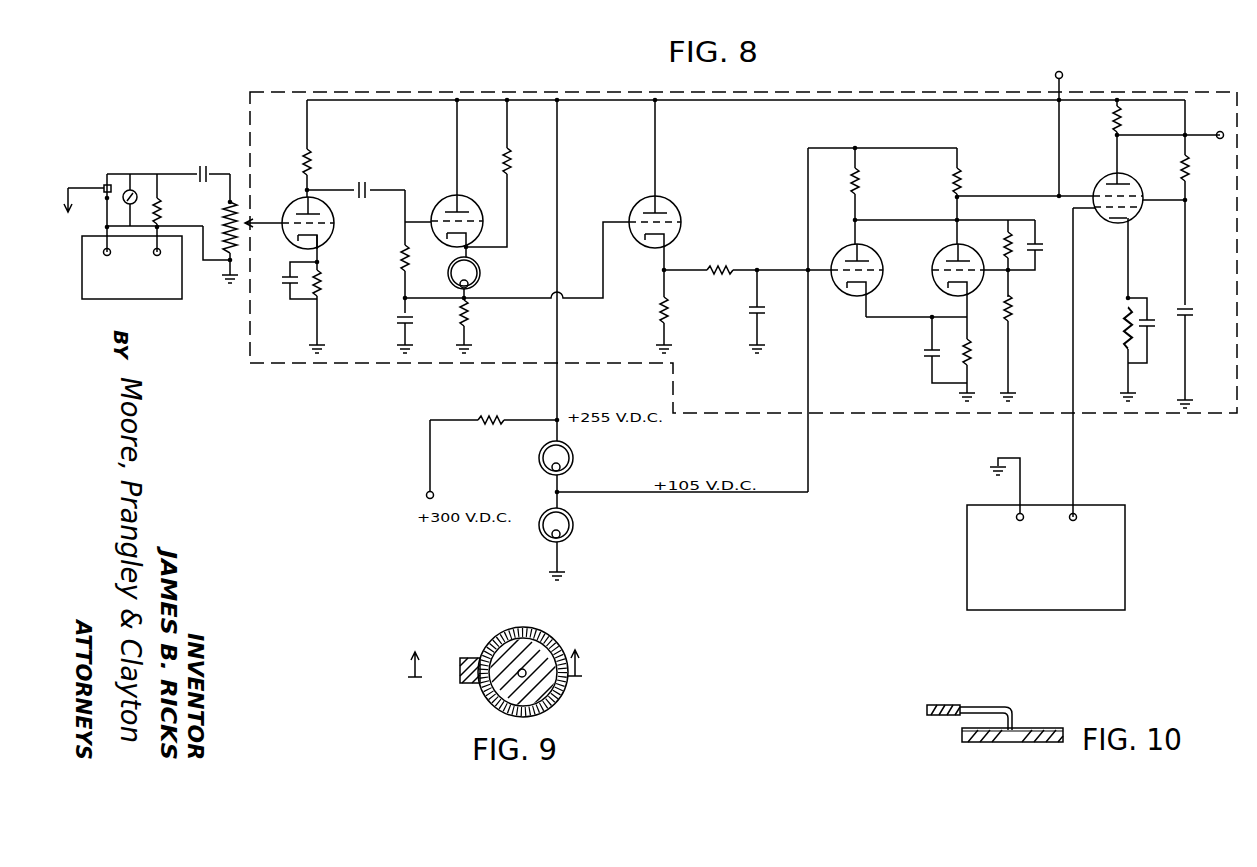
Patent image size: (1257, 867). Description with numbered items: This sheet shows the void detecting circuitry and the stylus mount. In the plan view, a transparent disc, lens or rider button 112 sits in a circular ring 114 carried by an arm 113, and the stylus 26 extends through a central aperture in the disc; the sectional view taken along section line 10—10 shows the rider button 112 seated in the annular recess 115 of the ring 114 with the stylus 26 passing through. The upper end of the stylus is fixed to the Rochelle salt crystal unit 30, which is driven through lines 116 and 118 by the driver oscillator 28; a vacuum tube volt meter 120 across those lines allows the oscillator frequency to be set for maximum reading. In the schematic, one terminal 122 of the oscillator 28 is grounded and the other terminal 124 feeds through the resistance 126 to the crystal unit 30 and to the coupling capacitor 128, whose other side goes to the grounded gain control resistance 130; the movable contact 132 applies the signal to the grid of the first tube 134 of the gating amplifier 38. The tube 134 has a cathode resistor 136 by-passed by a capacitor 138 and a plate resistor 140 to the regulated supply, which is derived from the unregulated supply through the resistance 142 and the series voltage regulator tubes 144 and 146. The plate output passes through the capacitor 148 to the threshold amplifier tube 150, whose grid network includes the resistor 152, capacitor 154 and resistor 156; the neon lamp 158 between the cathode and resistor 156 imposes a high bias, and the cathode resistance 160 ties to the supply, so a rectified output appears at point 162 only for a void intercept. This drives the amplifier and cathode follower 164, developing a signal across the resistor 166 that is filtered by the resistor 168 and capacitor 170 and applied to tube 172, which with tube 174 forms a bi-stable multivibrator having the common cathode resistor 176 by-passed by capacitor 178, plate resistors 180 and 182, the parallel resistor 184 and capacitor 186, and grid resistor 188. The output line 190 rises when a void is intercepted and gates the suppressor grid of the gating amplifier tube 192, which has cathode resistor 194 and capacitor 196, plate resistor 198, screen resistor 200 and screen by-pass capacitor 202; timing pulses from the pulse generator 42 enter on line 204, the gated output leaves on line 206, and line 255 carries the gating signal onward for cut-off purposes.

In FIG. 8, the stylus 26 is at (72, 186).
In FIG. 9, the stylus 26 is at (515, 680).
In FIG. 10, the stylus 26 is at (1016, 727).
In FIG. 8, the driver oscillator 28 is at (160, 288).
In FIG. 8, the crystal unit 30 is at (104, 188).
In FIG. 10, the crystal unit 30 is at (927, 710).
In FIG. 8, the gating amplifier 38 is at (368, 372).
In FIG. 8, the pulse generator 42 is at (1115, 505).
In FIG. 9, the section line 10— 10 is at (491, 665).
In FIG. 9, the disc, lens or rider button 112 is at (548, 676).
In FIG. 10, the disc, lens or rider button 112 is at (985, 743).
In FIG. 9, the arm 113 is at (470, 662).
In FIG. 9, the circular ring 114 is at (568, 648).
In FIG. 10, the circular ring 114 is at (1063, 742).
In FIG. 10, the annular recess 115 is at (962, 737).
In FIG. 8, the line 116 is at (124, 190).
In FIG. 8, the line 118 is at (152, 211).
In FIG. 8, the vacuum tube volt meter 120 is at (132, 174).
In FIG. 8, the terminal 122 is at (102, 229).
In FIG. 8, the terminal 124 is at (163, 262).
In FIG. 8, the resistance 126 is at (221, 215).
In FIG. 8, the coupling capacitor 128 is at (205, 164).
In FIG. 8, the resistance 130 is at (270, 192).
In FIG. 8, the movable contact 132 is at (270, 227).
In FIG. 8, the vacuum tube 134 is at (322, 238).
In FIG. 8, the resistor 136 is at (330, 286).
In FIG. 8, the capacitor 138 is at (287, 290).
In FIG. 8, the resistor 140 is at (313, 167).
In FIG. 8, the resistance 142 is at (490, 412).
In FIG. 8, the voltage regulator tube 144 is at (575, 470).
In FIG. 8, the voltage regulator tube 146 is at (572, 540).
In FIG. 8, the capacitor 148 is at (362, 186).
In FIG. 8, the threshold amplifier tube 150 is at (463, 197).
In FIG. 8, the resistor 152 is at (400, 253).
In FIG. 8, the capacitor 154 is at (397, 330).
In FIG. 8, the resistor 156 is at (470, 315).
In FIG. 8, the neon lamp 158 is at (482, 270).
In FIG. 8, the resistance 160 is at (512, 158).
In FIG. 8, the point 162 is at (470, 300).
In FIG. 8, the amplifier and cathode follower 164 is at (667, 198).
In FIG. 8, the resistor 166 is at (672, 320).
In FIG. 8, the resistor 168 is at (741, 266).
In FIG. 8, the capacitor 170 is at (766, 325).
In FIG. 8, the tube 172 is at (849, 248).
In FIG. 8, the tube 174 is at (941, 253).
In FIG. 8, the resistor 176 is at (975, 350).
In FIG. 8, the capacitor 178 is at (926, 356).
In FIG. 8, the resistor 180 is at (866, 186).
In FIG. 8, the resistor 182 is at (964, 172).
In FIG. 8, the resistor 184 is at (1004, 246).
In FIG. 8, the capacitor 186 is at (1037, 240).
In FIG. 8, the resistor 188 is at (1021, 301).
In FIG. 8, the line 190 is at (1023, 195).
In FIG. 8, the gating amplifier tube 192 is at (1100, 180).
In FIG. 8, the resistor 194 is at (1125, 320).
In FIG. 8, the capacitor 196 is at (1148, 316).
In FIG. 8, the resistor 198 is at (1123, 127).
In FIG. 8, the resistor 200 is at (1190, 170).
In FIG. 8, the capacitor 202 is at (1187, 305).
In FIG. 8, the line 204 is at (1074, 433).
In FIG. 8, the line 206 is at (1160, 135).
In FIG. 8, the line 255 is at (1059, 135).